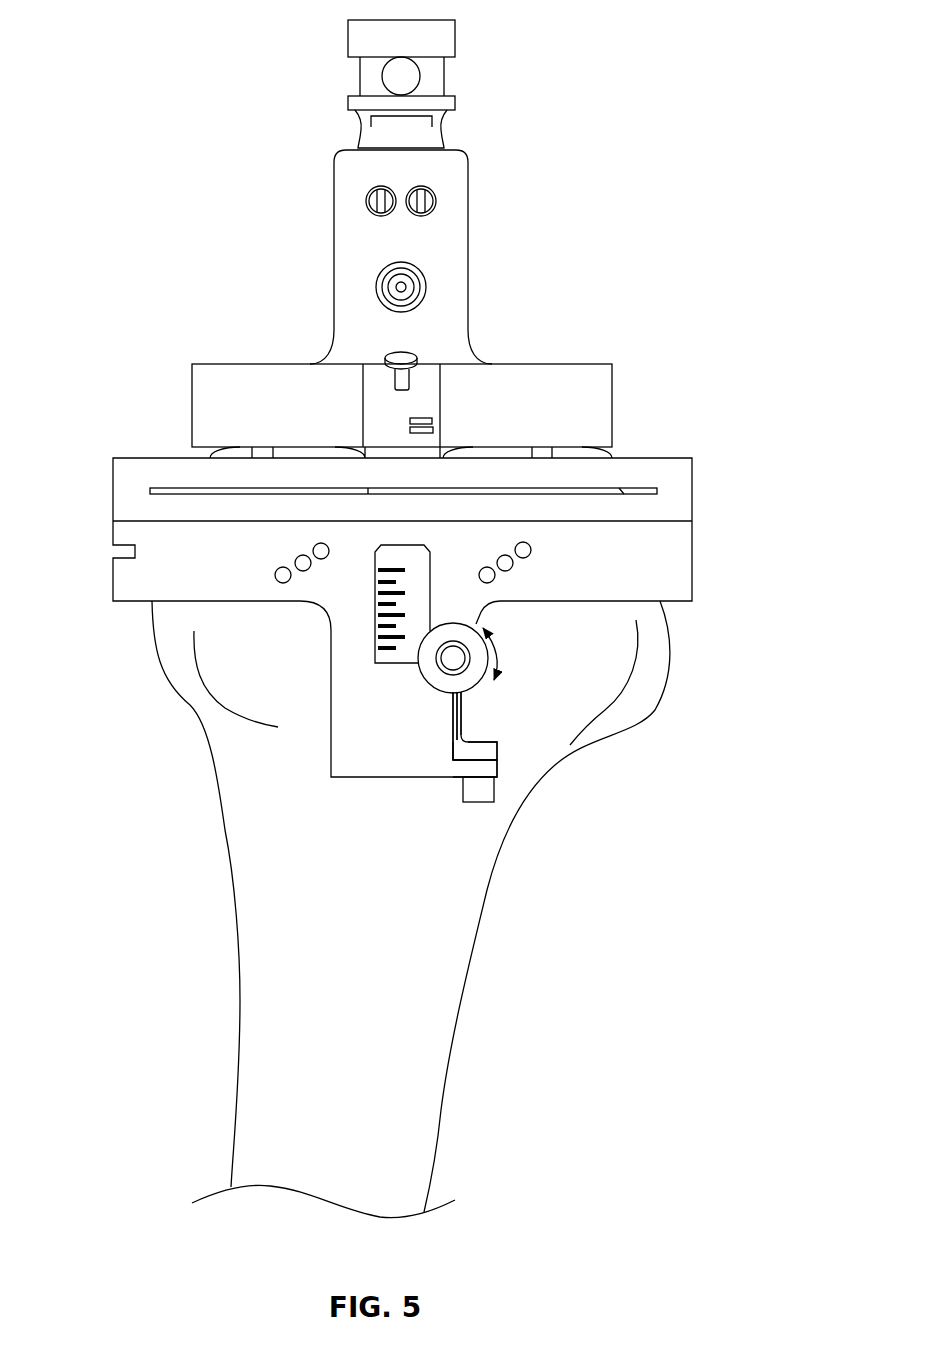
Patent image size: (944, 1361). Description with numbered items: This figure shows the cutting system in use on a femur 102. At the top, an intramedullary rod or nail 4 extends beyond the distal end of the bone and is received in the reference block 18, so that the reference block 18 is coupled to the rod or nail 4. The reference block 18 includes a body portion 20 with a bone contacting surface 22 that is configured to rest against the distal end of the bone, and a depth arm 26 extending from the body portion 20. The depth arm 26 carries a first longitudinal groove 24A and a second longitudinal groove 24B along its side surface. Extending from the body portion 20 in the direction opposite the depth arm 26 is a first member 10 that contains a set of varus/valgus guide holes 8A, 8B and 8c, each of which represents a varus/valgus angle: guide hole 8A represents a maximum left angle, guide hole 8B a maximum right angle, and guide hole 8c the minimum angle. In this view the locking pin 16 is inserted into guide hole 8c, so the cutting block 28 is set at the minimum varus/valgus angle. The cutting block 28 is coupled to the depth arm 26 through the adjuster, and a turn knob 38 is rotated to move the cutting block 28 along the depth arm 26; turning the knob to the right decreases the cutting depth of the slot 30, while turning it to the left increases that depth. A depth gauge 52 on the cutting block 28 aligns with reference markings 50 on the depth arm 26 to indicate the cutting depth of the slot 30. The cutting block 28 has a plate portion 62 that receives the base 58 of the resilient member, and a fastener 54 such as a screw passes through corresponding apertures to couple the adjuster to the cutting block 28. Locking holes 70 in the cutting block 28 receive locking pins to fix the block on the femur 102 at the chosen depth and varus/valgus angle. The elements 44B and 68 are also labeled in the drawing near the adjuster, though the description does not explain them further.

The intramedullary rod or nail 4 is at (447, 78).
The varus/valgus guide hole 8A is at (381, 186).
The varus/valgus guide hole 8B is at (422, 186).
The varus/valgus guide hole 8c is at (378, 286).
The first member 10 is at (347, 224).
The locking pin 16 is at (408, 285).
The reference block 18 is at (624, 343).
The body portion 20 is at (600, 402).
The bone contacting surface 22 is at (231, 453).
The first longitudinal groove 24A is at (426, 412).
The second longitudinal groove 24B is at (435, 428).
The depth arm 26 is at (410, 556).
The cutting block 28 is at (126, 474).
The slot 30 is at (151, 491).
The turn knob 38 is at (455, 670).
The arm 44B is at (460, 716).
The reference markings 50 is at (417, 600).
The depth gauge 52 is at (384, 601).
The fastener 54 is at (470, 802).
The base 58 is at (462, 752).
The plate portion 62 is at (490, 768).
The pointer 68 is at (382, 661).
The locking holes 70 is at (277, 575).
The femur 102 is at (430, 1120).